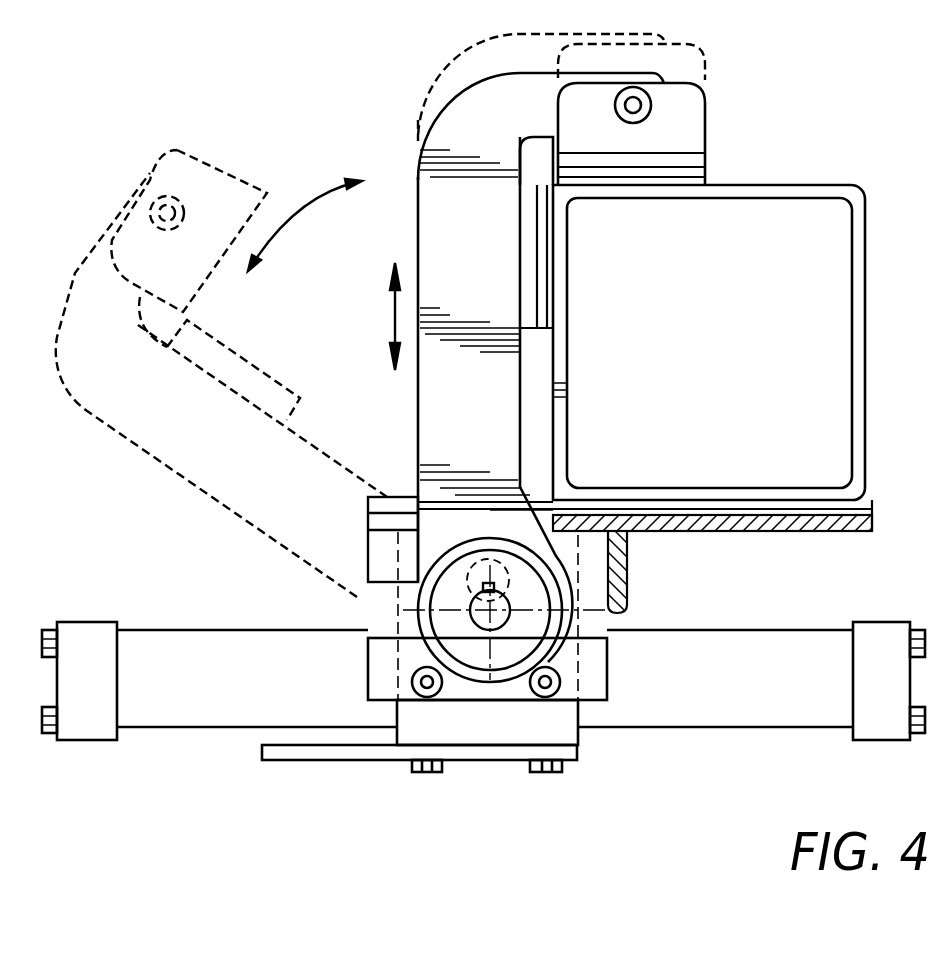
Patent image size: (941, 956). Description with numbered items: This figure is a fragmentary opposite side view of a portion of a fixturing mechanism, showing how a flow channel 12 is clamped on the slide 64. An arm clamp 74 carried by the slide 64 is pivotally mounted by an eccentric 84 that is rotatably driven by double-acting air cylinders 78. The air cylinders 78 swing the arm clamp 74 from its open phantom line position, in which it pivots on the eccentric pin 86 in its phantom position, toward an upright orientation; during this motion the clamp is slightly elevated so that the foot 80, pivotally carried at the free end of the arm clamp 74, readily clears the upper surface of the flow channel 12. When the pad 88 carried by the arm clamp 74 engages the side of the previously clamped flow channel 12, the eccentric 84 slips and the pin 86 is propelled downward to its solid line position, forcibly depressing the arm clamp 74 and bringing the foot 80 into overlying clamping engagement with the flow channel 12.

The flow channel 12 is at (858, 307).
The slide 64 is at (786, 531).
The arm clamp 74 is at (453, 398).
The double-acting air cylinders 78 is at (187, 713).
The foot 80 is at (683, 137).
The eccentric 84 is at (393, 617).
The eccentric pin 86 is at (506, 619).
The pad 88 is at (525, 292).